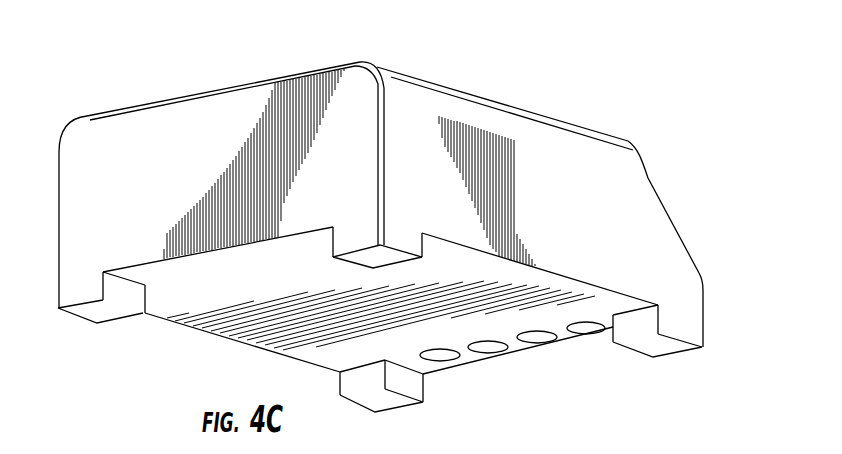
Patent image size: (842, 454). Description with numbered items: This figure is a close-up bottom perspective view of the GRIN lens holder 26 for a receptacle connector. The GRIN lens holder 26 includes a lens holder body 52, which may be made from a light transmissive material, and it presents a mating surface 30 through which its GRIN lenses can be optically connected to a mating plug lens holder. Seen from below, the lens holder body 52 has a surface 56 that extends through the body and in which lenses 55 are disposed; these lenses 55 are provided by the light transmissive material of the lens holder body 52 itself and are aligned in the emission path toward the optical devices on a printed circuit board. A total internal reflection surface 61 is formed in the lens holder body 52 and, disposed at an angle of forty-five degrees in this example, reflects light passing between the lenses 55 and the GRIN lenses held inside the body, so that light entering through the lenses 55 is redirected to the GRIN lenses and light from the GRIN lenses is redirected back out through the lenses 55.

The GRIN lens holder 26 is at (251, 78).
The mating surface 30 is at (342, 72).
The lens holder body 52 is at (85, 116).
The total internal reflection (TIR) surface 61 is at (661, 196).
The surface 56 is at (606, 309).
The lenses 55 is at (586, 329).